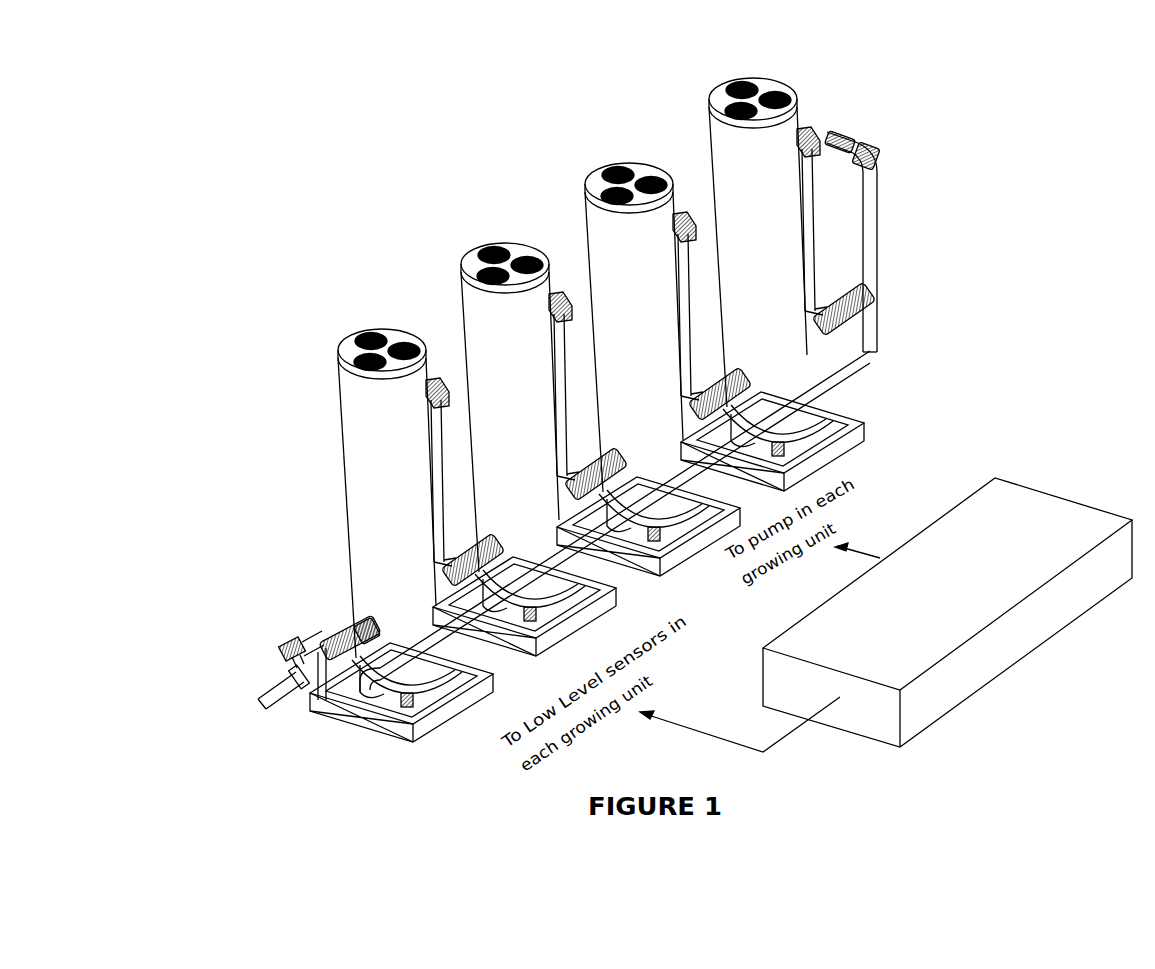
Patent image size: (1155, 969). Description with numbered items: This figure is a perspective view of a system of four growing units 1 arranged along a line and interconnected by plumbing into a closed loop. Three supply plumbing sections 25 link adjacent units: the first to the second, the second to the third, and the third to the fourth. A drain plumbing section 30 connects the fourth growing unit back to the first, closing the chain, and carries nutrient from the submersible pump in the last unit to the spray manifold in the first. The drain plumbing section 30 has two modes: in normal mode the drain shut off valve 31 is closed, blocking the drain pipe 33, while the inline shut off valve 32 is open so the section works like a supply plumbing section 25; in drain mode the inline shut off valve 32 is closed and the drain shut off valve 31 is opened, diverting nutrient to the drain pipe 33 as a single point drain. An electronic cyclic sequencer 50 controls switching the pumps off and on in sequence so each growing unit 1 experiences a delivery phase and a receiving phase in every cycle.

The growing unit 1 is at (700, 148).
The supply plumbing section 25 is at (700, 318).
The drain plumbing section 30 is at (867, 257).
The drain shut off valve 31 is at (297, 670).
The inline shut off valve 32 is at (320, 650).
The drain pipe 33 is at (263, 703).
The electronic cyclic sequencer 50 is at (967, 535).